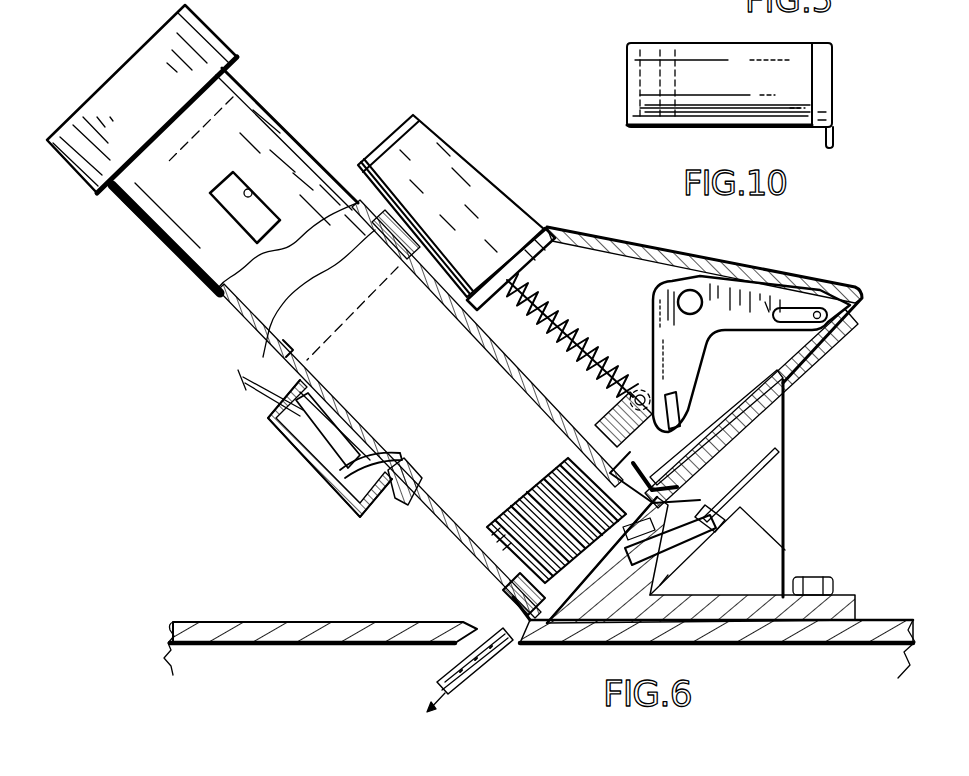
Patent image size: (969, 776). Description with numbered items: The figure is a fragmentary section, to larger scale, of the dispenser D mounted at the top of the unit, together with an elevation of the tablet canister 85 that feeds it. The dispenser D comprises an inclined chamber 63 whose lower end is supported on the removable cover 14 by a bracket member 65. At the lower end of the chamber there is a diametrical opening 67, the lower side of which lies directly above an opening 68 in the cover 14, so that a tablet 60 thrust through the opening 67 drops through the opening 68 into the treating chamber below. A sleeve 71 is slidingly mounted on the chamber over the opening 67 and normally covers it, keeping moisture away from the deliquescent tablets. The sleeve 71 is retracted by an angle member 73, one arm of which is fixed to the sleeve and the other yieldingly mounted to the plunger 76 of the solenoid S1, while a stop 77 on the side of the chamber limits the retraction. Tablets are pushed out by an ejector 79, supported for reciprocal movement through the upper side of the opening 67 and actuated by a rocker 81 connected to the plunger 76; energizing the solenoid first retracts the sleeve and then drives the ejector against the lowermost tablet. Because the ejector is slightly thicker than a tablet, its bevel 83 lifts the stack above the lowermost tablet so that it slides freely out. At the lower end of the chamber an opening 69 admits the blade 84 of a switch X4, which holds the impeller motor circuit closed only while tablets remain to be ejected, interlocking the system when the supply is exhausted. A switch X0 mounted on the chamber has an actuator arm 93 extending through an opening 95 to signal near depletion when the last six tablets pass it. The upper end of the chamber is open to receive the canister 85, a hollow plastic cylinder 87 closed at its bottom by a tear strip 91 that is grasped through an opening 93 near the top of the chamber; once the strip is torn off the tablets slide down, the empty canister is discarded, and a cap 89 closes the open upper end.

In FIG. 6, the removable cover 14 is at (257, 620).
In FIG. 6, the tablet 60 is at (527, 497).
In FIG. 6, the inclined chamber 63 is at (278, 348).
In FIG. 6, the bracket member 65 is at (767, 427).
In FIG. 6, the diametrical opening 67 is at (672, 490).
In FIG. 6, the opening in the cover 68 is at (517, 637).
In FIG. 6, the opening at lower end of chamber 69 is at (637, 537).
In FIG. 6, the sleeve 71 is at (510, 592).
In FIG. 6, the angle member 73 is at (620, 413).
In FIG. 6, the plunger 76 is at (563, 318).
In FIG. 6, the stop 77 is at (400, 510).
In FIG. 6, the ejector 79 is at (780, 410).
In FIG. 6, the rocker 81 is at (737, 297).
In FIG. 6, the bevel 83 is at (683, 472).
In FIG. 6, the blade 84 is at (700, 535).
In FIG. 6, the canister 85 is at (443, 525).
In FIG. 10, the canister 85 is at (678, 38).
In FIG. 10, the hollow plastic cylinder 87 is at (667, 120).
In FIG. 6, the cap 89 is at (203, 43).
In FIG. 10, the tear strip 91 is at (833, 128).
In FIG. 6, the opening / actuator arm 93 is at (250, 197).
In FIG. 6, the opening 95 is at (352, 495).
In FIG. 6, the solenoid S1 is at (467, 185).
In FIG. 6, the switch X0 is at (347, 473).
In FIG. 6, the switch X4 is at (670, 565).
In FIG. 6, the dispenser D is at (178, 296).